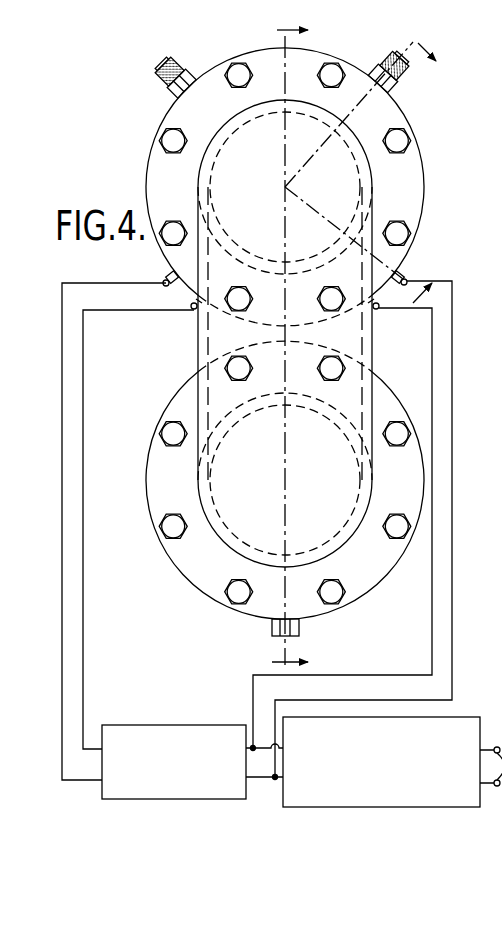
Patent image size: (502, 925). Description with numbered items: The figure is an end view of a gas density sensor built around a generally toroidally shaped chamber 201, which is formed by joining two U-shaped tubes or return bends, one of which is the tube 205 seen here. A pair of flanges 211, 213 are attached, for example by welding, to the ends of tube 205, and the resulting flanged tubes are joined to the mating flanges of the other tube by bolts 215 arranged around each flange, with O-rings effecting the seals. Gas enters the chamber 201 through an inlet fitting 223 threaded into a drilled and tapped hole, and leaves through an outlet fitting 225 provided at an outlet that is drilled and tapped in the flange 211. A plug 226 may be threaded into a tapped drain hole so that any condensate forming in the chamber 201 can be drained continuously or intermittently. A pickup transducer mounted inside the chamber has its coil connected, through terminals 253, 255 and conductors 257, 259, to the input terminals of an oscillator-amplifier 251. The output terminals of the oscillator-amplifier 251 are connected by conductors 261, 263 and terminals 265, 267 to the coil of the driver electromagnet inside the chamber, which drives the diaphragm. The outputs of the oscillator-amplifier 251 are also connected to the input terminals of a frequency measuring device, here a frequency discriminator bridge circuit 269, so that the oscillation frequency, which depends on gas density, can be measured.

The toroidally shaped chamber 201 is at (188, 336).
The U-shaped tube 205 is at (353, 339).
The flange 211 is at (410, 179).
The flange 213 is at (376, 566).
The bolts 215 is at (411, 143).
The inlet fitting 223 is at (401, 62).
The outlet fitting 225 is at (160, 74).
The plug 226 is at (270, 630).
The oscillator-amplifier 251 is at (185, 725).
The terminal 253 is at (165, 277).
The terminal 255 is at (189, 306).
The conductor 257 is at (64, 398).
The conductor 259 is at (84, 474).
The conductor 261 is at (432, 603).
The conductor 263 is at (452, 614).
The terminal 265 is at (379, 309).
The terminal 267 is at (405, 277).
The frequency discriminator bridge circuit 269 is at (453, 717).